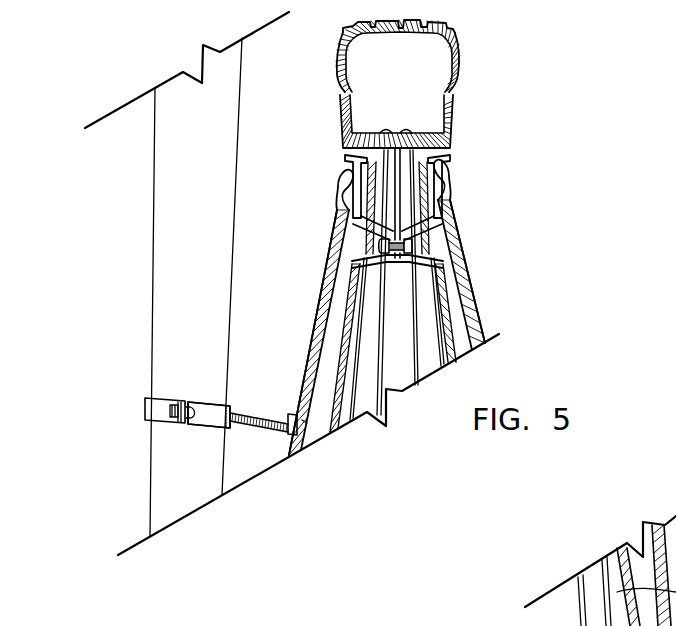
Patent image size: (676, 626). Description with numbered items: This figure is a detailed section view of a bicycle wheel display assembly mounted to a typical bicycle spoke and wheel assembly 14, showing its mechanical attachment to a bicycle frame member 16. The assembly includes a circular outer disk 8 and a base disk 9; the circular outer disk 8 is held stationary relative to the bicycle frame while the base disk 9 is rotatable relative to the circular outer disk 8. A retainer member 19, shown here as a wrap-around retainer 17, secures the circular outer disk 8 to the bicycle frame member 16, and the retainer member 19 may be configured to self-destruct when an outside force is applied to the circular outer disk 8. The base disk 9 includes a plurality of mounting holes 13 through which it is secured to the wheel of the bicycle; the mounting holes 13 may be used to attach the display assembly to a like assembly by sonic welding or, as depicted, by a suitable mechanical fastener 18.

The circular outer disk 8 is at (440, 279).
The base disk 9 is at (447, 315).
The mounting holes 13 is at (413, 262).
The spoke and wheel assembly 14 is at (450, 135).
The bicycle frame member 16 is at (177, 285).
The wrap-around retainer 17 is at (158, 410).
The mechanical fastener 18 is at (410, 243).
The retainer member 19 is at (252, 412).